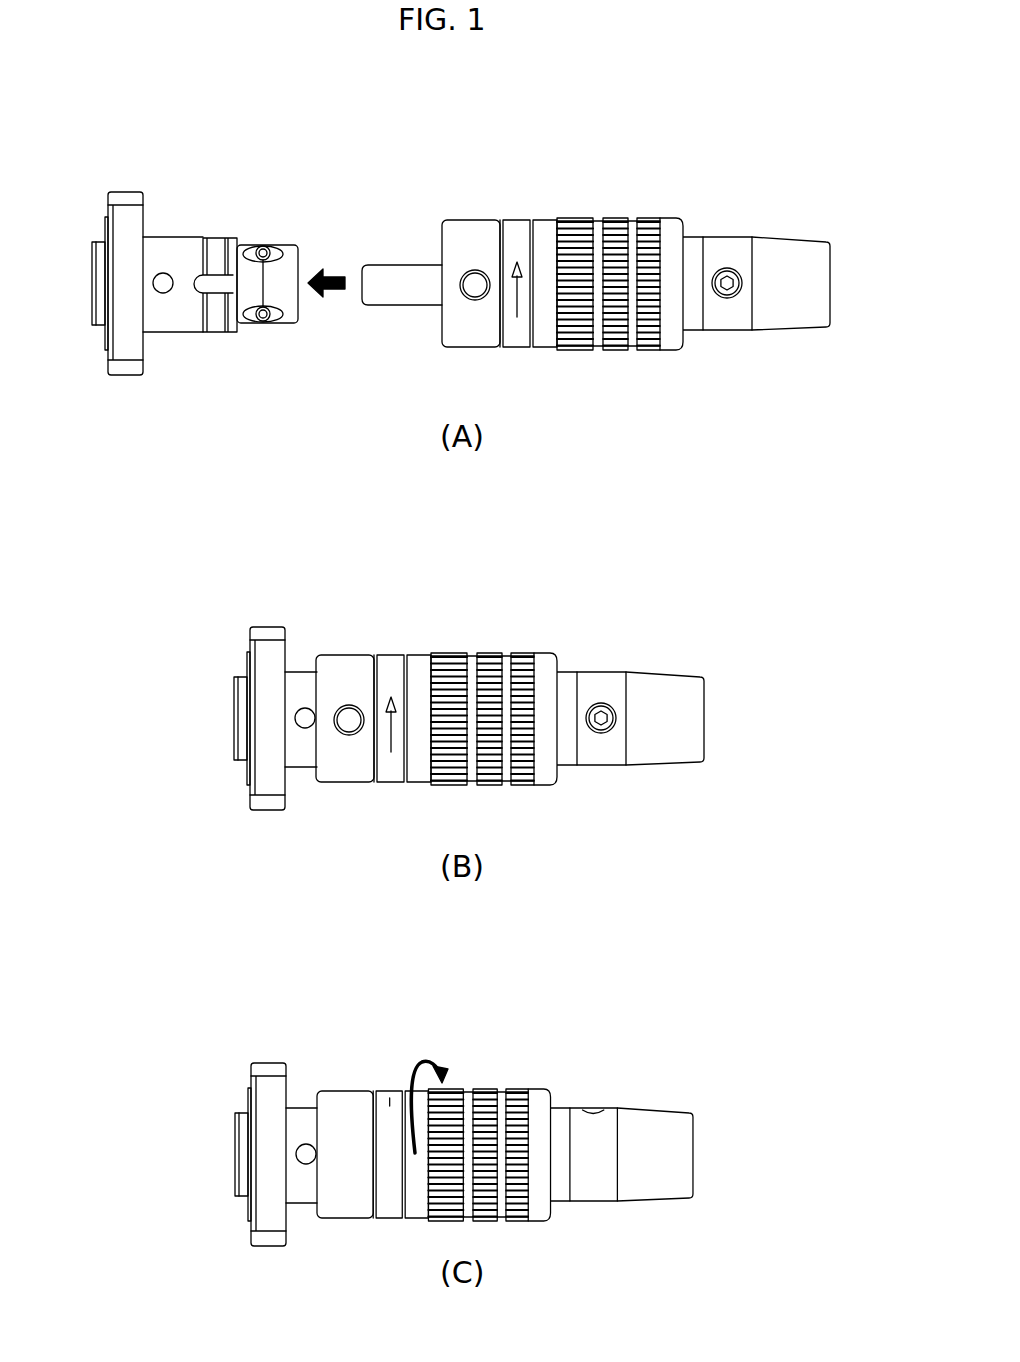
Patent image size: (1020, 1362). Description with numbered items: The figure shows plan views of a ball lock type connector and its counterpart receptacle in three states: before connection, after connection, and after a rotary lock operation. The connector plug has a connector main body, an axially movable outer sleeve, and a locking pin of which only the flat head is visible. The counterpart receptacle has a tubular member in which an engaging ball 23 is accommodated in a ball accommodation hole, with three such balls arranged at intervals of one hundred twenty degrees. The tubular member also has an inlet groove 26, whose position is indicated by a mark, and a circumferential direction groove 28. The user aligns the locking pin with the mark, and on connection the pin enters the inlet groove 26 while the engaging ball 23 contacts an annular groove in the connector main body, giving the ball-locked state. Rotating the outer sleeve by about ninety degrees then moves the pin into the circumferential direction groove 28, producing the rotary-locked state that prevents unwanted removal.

The engaging ball 23 is at (265, 249).
The inlet groove 26 is at (235, 290).
The circumferential direction groove 28 is at (218, 248).